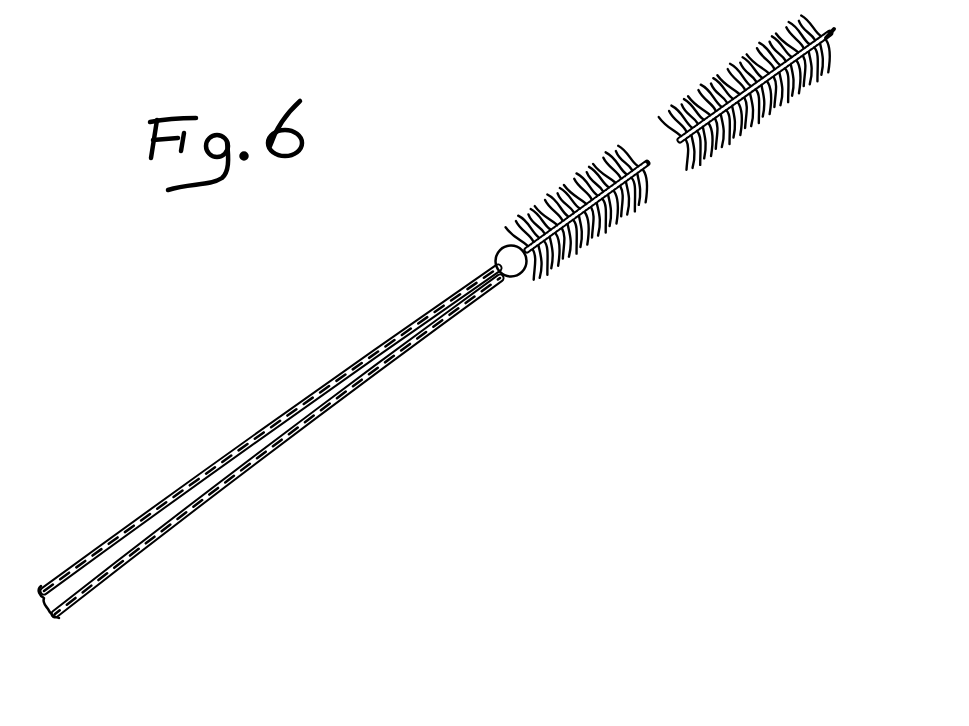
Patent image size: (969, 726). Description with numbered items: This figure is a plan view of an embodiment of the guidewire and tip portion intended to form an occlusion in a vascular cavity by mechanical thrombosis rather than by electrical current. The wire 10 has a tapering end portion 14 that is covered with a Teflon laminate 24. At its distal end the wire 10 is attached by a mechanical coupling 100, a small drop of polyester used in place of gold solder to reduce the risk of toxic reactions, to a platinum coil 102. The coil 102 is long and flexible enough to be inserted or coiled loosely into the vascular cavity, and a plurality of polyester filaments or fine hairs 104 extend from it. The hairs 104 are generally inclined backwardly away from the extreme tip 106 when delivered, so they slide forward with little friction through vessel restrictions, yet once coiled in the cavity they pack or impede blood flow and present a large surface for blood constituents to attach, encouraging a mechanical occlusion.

The wire 10 is at (271, 415).
The tapering end portion 14 is at (327, 408).
The Teflon laminate 24 is at (426, 315).
The mechanical coupling 100 is at (504, 247).
The platinum coil 102 is at (627, 215).
The filaments or fine hairs 104 is at (717, 80).
The extreme tip 106 is at (830, 33).